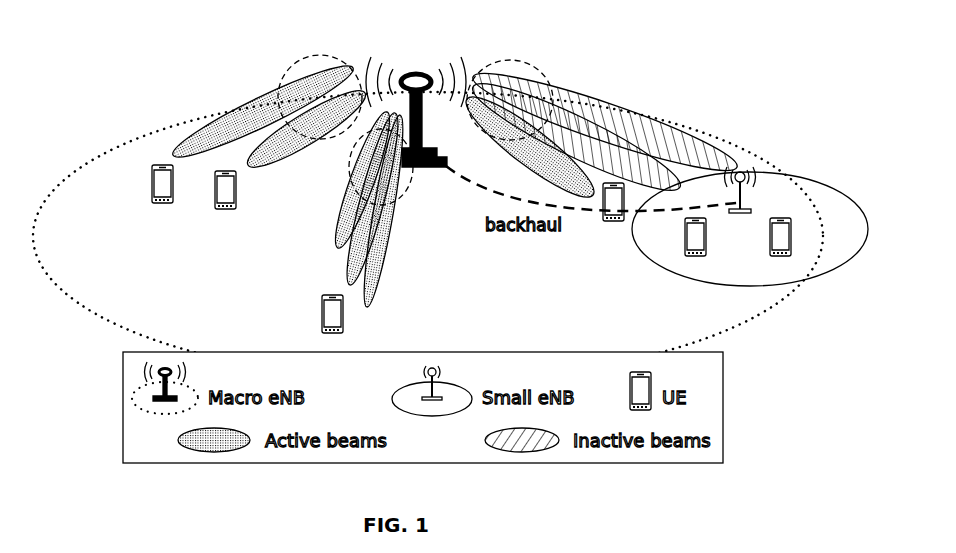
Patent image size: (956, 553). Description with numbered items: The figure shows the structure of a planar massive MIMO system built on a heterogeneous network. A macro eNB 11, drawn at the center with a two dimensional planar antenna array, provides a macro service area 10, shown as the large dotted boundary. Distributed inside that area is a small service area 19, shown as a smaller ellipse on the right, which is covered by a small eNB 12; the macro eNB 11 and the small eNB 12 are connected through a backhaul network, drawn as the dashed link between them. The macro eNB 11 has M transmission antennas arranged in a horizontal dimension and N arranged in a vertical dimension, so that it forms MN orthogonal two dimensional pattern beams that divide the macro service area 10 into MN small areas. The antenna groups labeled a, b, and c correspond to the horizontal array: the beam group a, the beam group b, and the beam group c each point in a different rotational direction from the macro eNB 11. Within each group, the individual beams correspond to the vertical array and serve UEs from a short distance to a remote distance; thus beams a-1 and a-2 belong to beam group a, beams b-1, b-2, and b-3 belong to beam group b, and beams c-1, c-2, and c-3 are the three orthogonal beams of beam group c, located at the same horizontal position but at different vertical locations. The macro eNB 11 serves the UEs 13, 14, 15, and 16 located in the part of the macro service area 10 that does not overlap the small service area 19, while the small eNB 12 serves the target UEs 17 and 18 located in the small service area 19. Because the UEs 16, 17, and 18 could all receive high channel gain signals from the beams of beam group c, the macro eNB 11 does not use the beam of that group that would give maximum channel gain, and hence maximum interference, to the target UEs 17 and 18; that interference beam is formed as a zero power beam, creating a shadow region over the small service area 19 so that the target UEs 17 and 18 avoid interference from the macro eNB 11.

The macro service area 10 is at (111, 147).
The macro eNB 11 is at (417, 66).
The small eNB 12 is at (743, 168).
The UE 13 is at (163, 206).
The UE 14 is at (226, 211).
The UE 15 is at (320, 313).
The UE 16 is at (613, 224).
The target UE 17 is at (695, 259).
The target UE 18 is at (780, 259).
The small service area 19 is at (835, 188).
The beam group a is at (270, 103).
The active beam a-1 is at (304, 152).
The active beam a-2 is at (211, 113).
The beam group b is at (359, 208).
The active beam b-1 is at (336, 229).
The active beam b-2 is at (346, 266).
The active beam b-3 is at (365, 286).
The beam group c is at (599, 112).
The active beam c-1 is at (504, 143).
The inactive beam c-2 is at (567, 110).
The inactive beam c-3 is at (600, 92).